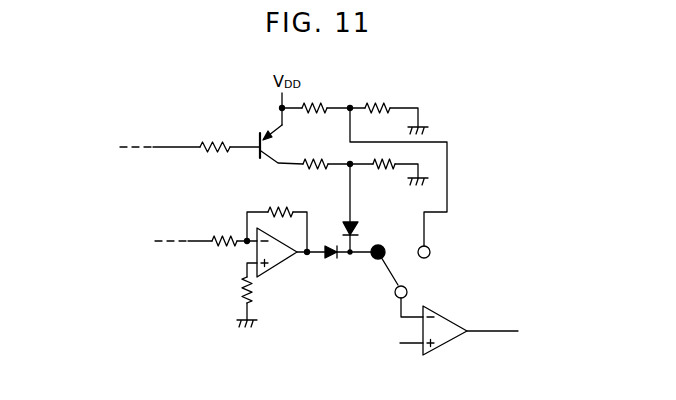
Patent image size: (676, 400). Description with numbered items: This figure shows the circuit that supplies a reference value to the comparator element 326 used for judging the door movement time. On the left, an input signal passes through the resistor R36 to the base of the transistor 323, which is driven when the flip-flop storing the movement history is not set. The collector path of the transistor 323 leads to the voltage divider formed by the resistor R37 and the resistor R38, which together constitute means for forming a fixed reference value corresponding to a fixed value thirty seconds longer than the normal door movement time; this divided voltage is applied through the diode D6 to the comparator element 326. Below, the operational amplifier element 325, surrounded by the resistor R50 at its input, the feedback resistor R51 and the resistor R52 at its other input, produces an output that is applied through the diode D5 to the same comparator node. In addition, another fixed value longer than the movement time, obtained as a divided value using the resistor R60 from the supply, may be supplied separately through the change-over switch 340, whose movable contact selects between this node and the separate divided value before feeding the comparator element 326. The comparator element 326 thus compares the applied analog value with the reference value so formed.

The transistor 323 is at (273, 145).
The operational amplifier element 325 is at (280, 272).
The comparator element 326 is at (445, 313).
The change-over switch 340 is at (431, 263).
The resistor R36 is at (213, 132).
The resistor R60 is at (350, 95).
The resistor R37 is at (317, 177).
The resistor R38 is at (380, 177).
The resistor R50 is at (221, 228).
The resistor R51 is at (277, 217).
The resistor R52 is at (241, 285).
The diode D5 is at (335, 268).
The diode D6 is at (364, 208).